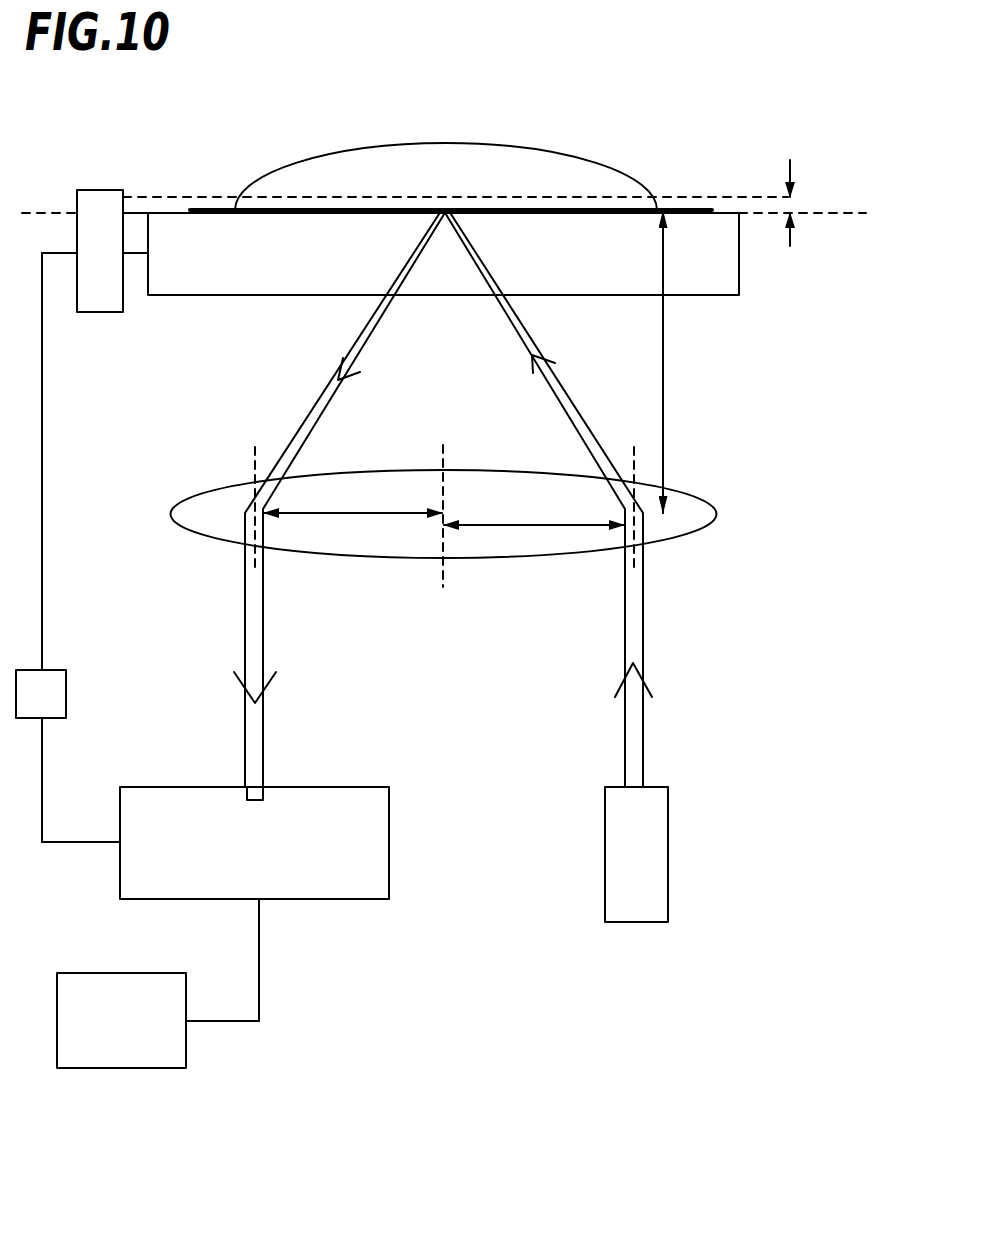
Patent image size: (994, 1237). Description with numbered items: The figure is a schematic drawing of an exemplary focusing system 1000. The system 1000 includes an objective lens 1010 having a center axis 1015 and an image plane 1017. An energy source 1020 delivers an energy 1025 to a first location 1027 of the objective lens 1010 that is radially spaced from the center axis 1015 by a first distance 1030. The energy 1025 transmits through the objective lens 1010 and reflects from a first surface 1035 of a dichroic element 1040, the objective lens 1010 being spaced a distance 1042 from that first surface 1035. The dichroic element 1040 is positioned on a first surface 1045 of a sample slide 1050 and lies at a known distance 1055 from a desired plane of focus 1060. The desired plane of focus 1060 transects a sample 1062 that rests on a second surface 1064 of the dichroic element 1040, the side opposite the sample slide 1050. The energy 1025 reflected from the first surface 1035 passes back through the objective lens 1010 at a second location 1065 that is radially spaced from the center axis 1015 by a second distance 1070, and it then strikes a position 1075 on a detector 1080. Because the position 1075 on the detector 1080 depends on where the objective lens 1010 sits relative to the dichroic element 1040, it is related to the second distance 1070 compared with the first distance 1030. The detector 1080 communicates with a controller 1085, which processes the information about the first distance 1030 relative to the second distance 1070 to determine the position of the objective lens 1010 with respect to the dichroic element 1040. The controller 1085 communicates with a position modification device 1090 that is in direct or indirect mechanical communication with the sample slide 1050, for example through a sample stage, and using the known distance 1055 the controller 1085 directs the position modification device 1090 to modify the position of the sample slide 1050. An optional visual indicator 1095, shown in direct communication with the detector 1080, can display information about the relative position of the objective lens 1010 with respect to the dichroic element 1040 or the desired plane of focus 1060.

The system 1000 is at (280, 104).
The objective lens 1010 is at (705, 514).
The center axis 1015 is at (443, 588).
The image plane 1017 is at (52, 212).
The energy source 1020 is at (653, 832).
The energy 1025 is at (635, 735).
The first location 1027 is at (634, 446).
The first distance 1030 is at (540, 528).
The first surface 1035 is at (708, 216).
The dichroic element 1040 is at (697, 207).
The distance 1042 is at (664, 358).
The first surface 1045 is at (729, 208).
The sample slide 1050 is at (727, 282).
The known distance 1055 is at (791, 204).
The desired plane of focus 1060 is at (755, 196).
The sample 1062 is at (552, 162).
The second surface 1064 is at (215, 208).
The second location 1065 is at (255, 446).
The second distance 1070 is at (340, 516).
The position 1075 is at (258, 794).
The detector 1080 is at (375, 838).
The controller 1085 is at (50, 692).
The position modification device 1090 is at (103, 195).
The visual indicator 1095 is at (78, 983).